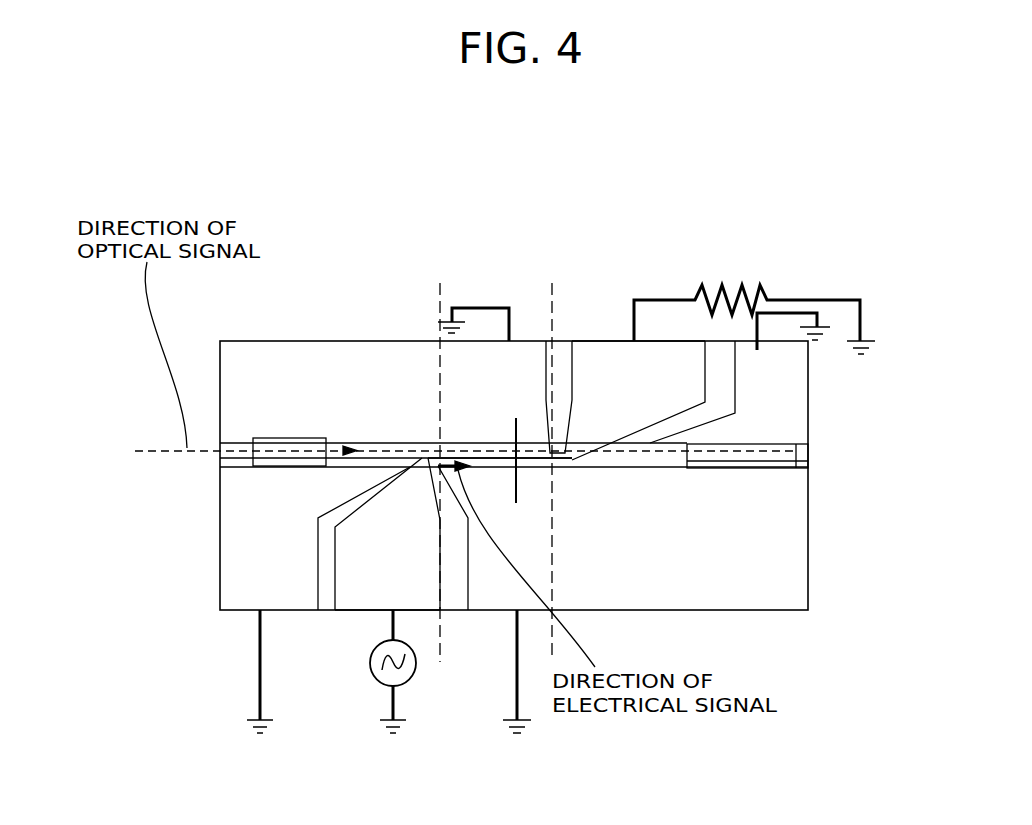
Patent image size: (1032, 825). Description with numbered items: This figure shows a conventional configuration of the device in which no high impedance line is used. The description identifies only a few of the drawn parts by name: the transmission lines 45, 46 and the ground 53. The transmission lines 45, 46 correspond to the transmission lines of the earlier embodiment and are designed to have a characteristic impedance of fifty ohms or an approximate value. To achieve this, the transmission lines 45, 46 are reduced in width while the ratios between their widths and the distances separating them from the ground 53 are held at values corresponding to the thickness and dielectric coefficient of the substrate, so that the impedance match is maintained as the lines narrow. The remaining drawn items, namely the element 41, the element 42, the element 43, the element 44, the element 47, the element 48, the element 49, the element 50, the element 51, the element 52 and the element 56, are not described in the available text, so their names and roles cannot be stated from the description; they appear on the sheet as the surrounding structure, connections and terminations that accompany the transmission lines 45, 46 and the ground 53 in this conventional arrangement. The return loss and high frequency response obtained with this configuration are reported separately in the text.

The optical waveguide 41 is at (382, 458).
The signal electrode 42 is at (467, 457).
The signal source 43 is at (403, 685).
The terminating resistor 44 is at (735, 290).
The transmission line 45 is at (397, 526).
The transmission line 46 is at (590, 425).
The ground connection 47 is at (473, 300).
The tapered electrode 48 is at (557, 356).
The ground electrode 49 is at (360, 597).
The ground electrode 50 is at (602, 355).
The ground line 51 is at (517, 702).
The ground terminal 52 is at (532, 729).
The ground 53 is at (237, 350).
The waveguide termination 56 is at (775, 455).